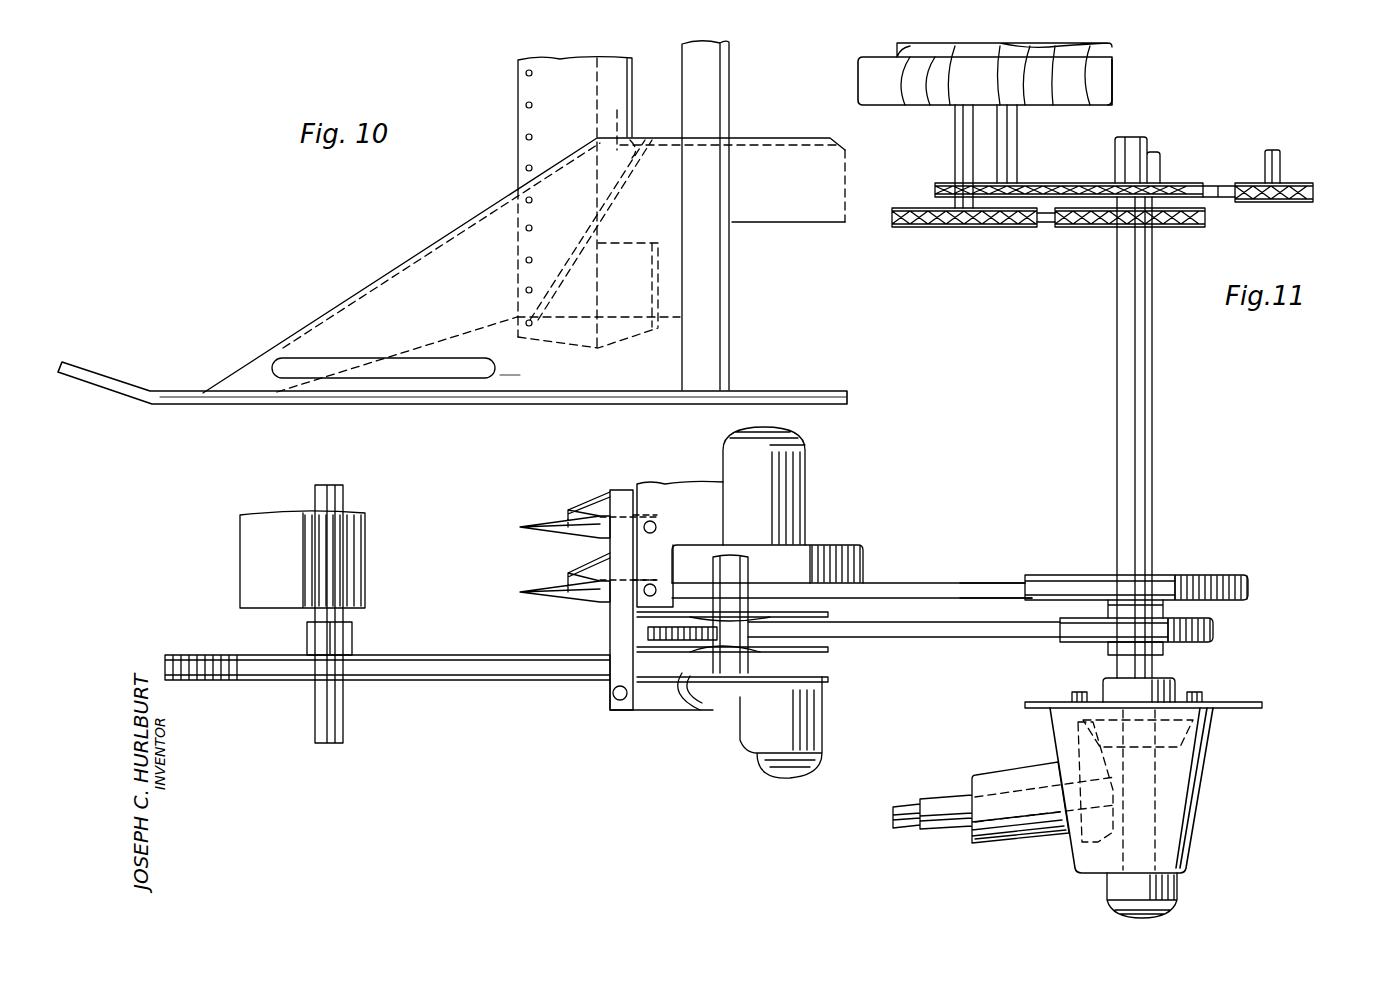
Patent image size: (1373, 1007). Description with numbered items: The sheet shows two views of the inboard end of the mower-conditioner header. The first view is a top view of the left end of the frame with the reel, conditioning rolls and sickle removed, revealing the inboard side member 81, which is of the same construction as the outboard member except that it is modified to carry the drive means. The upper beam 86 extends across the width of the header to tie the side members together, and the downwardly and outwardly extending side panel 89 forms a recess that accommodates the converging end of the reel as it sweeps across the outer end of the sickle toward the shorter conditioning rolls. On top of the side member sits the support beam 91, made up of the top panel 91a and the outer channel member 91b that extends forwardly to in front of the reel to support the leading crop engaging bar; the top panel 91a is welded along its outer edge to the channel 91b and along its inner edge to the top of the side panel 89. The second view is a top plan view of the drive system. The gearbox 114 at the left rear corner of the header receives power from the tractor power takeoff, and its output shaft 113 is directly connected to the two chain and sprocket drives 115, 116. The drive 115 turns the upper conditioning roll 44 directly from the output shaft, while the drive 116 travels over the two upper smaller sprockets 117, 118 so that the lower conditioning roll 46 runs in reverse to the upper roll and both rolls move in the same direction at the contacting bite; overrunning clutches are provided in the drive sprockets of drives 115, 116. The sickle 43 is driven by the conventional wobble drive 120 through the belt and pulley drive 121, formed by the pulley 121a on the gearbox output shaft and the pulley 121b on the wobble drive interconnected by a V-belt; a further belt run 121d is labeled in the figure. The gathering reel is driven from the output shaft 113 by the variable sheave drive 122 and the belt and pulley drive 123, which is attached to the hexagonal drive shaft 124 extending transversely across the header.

In FIG. 10, the side member 81 is at (303, 412).
In FIG. 10, the upper beam 86 is at (723, 364).
In FIG. 10, the side panel 89 is at (400, 272).
In FIG. 10, the support beam 91 is at (548, 384).
In FIG. 10, the top panel 91a is at (400, 402).
In FIG. 10, the outer channel member 91b is at (518, 377).
In FIG. 11, the sickle 43 is at (581, 494).
In FIG. 11, the upper conditioning roll 44 is at (876, 106).
In FIG. 11, the lower conditioning roll 46 is at (1112, 92).
In FIG. 11, the output shaft 113 is at (1155, 410).
In FIG. 11, the gearbox 114 is at (1200, 800).
In FIG. 11, the chain and sprocket drive 115 is at (1048, 228).
In FIG. 11, the chain and sprocket drive 116 is at (1218, 190).
In FIG. 11, the upper smaller sprocket 117 is at (1165, 183).
In FIG. 11, the upper smaller sprocket 118 is at (1312, 183).
In FIG. 11, the wobble drive 120 is at (837, 524).
In FIG. 11, the belt and pulley drive 121 is at (912, 582).
In FIG. 11, the pulley 121a is at (1188, 575).
In FIG. 11, the pulley 121b is at (863, 562).
In FIG. 11, the belt run 121d is at (980, 590).
In FIG. 11, the variable sheave drive 122 is at (891, 652).
In FIG. 11, the belt and pulley drive 123 is at (436, 632).
In FIG. 11, the drive shaft 124 is at (340, 737).